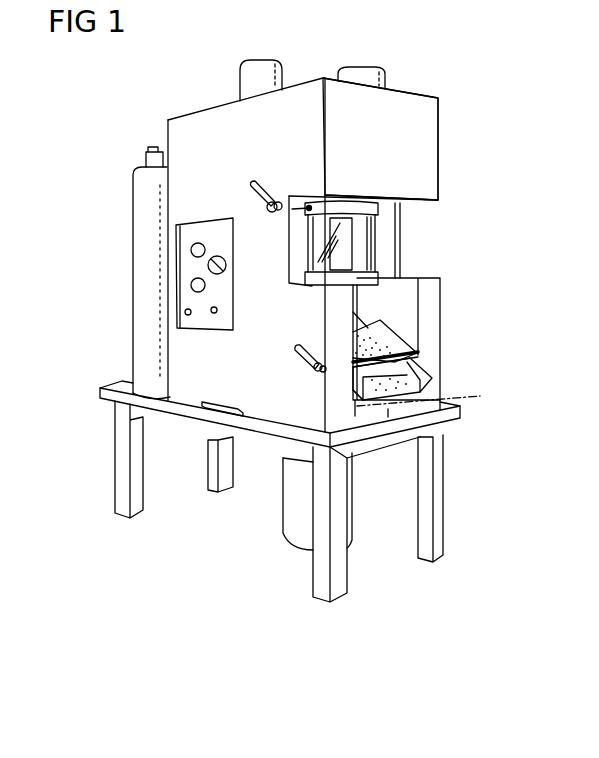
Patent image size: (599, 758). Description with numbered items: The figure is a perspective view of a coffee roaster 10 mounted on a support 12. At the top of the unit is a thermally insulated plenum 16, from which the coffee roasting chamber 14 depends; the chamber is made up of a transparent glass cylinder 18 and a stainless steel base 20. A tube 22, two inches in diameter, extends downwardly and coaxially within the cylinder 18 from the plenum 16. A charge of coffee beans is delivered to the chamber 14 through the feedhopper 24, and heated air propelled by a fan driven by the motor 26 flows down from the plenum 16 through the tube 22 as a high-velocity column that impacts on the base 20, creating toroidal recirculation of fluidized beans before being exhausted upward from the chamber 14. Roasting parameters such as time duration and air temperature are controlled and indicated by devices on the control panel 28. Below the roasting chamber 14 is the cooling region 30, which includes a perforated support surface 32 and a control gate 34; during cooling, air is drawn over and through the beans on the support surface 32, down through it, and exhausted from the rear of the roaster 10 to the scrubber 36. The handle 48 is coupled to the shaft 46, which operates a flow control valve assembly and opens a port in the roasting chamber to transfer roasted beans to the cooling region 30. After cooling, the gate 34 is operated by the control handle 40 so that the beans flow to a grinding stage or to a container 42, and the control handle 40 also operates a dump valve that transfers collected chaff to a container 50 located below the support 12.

The coffee roaster 10 is at (443, 90).
The support 12 is at (465, 412).
The coffee roasting chamber 14 is at (378, 229).
The thermally insulated plenum 16 is at (430, 148).
The transparent glass cylinder 18 is at (370, 253).
The stainless steel base 20 is at (357, 284).
The tube 22 is at (345, 243).
The feedhopper 24 is at (359, 67).
The motor 26 is at (243, 75).
The control panel 28 is at (183, 262).
The cooling region 30 is at (399, 322).
The perforated support surface 32 is at (378, 342).
The control gate 34 is at (398, 361).
The scrubber 36 is at (135, 207).
The control handle 40 is at (295, 355).
The container 42 is at (431, 402).
The shaft 46 is at (305, 210).
The handle 48 is at (260, 180).
The container 50 is at (288, 517).